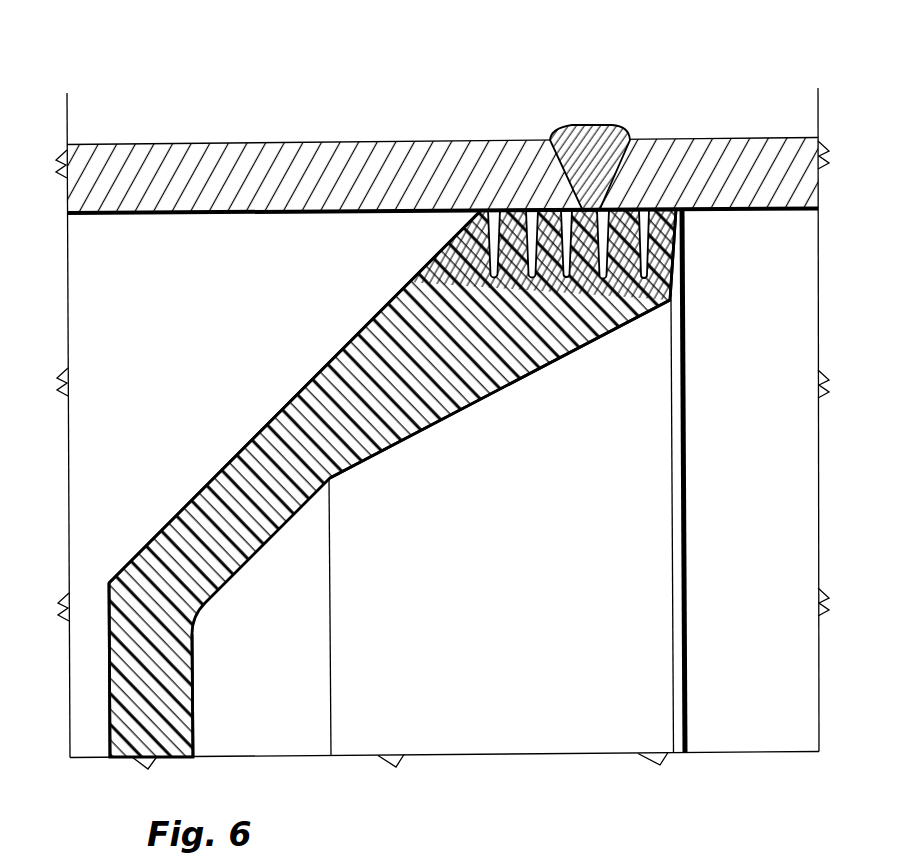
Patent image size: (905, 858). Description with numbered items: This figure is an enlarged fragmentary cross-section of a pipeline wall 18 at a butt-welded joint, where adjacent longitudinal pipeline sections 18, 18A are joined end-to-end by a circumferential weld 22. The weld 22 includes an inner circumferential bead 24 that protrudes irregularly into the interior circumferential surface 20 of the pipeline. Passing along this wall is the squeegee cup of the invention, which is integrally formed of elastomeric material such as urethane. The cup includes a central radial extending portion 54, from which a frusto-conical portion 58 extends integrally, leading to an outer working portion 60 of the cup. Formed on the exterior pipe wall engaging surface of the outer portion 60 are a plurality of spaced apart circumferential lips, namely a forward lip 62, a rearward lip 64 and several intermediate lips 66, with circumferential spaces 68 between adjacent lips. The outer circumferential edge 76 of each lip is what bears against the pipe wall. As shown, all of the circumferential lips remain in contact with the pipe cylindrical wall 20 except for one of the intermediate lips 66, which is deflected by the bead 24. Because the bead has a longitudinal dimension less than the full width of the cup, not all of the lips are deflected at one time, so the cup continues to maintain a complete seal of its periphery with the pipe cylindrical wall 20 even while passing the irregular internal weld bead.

The pipeline wall 18 is at (313, 162).
The pipeline section 18A is at (761, 157).
The interior circumferential surface 20 is at (157, 214).
The circumferential weld 22 is at (588, 135).
The inner circumferential bead 24 is at (578, 216).
The central radial extending portion 54 is at (163, 682).
The frusto-conical portion 58 is at (333, 360).
The outer working portion 60 is at (608, 333).
The forward lip 62 is at (463, 230).
The rearward lip 64 is at (688, 216).
The intermediate lips 66 is at (528, 214).
The circumferential spaces 68 is at (657, 211).
The outer circumferential edge 76 is at (673, 208).